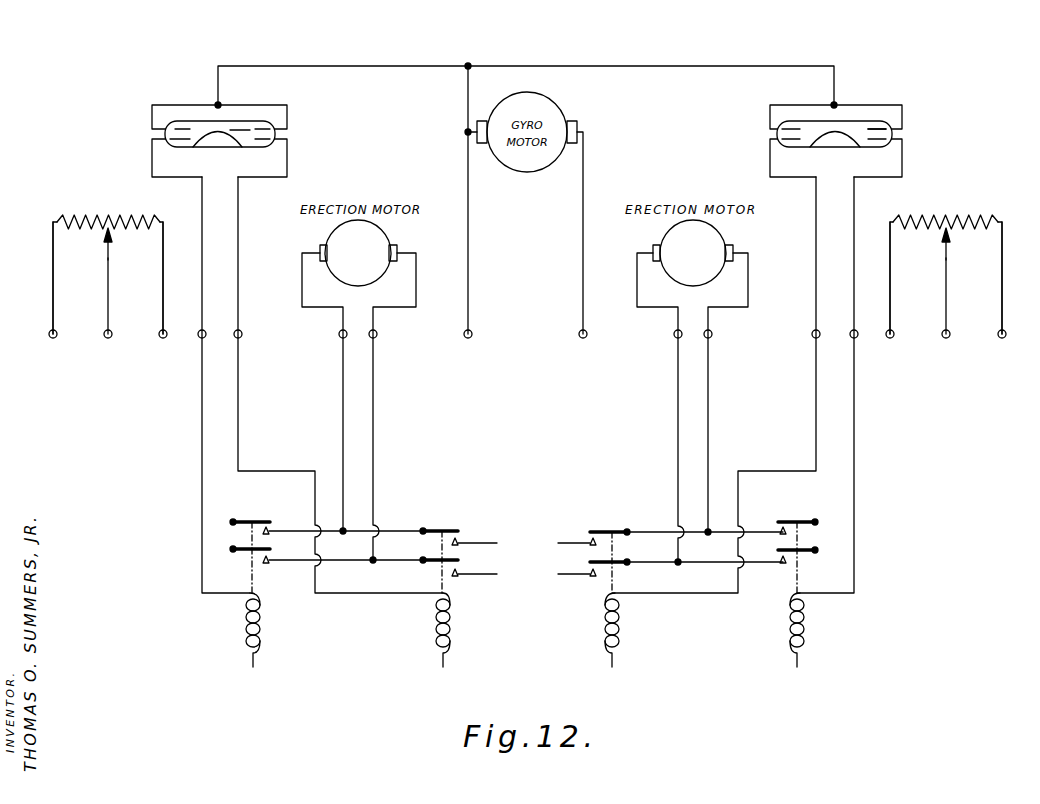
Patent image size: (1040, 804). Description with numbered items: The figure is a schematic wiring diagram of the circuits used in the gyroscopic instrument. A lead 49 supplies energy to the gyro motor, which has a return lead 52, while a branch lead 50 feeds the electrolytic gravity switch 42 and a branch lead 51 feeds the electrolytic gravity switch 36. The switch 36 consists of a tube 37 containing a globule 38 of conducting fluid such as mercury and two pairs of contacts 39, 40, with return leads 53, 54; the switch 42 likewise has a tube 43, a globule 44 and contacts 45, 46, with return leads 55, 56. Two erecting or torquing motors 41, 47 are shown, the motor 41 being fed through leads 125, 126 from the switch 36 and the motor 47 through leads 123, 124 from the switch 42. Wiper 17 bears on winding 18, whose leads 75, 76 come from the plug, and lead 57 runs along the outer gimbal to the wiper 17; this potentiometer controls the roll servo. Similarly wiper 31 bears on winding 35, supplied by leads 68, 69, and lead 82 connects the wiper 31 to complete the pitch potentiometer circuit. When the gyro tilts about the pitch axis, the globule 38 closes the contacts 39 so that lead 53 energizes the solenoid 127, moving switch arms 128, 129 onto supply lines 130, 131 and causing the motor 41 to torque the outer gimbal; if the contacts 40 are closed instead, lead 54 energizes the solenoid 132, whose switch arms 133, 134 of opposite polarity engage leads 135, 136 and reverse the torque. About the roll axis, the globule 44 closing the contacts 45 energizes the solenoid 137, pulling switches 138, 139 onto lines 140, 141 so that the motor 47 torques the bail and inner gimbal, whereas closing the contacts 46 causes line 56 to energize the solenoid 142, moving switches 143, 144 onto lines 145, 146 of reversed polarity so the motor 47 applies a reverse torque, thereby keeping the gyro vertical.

The potentiometer wiper 17 is at (112, 240).
The winding 18 is at (110, 218).
The wiper 31 is at (950, 242).
The winding 35 is at (985, 218).
The electrolytic gravity switch 36 is at (832, 125).
The tube 37 is at (868, 122).
The globule 38 is at (842, 133).
The contacts 39 is at (782, 128).
The contacts 40 is at (893, 126).
The torquing motor 41 is at (712, 243).
The electrolytic gravity switch 42 is at (250, 129).
The tube 43 is at (195, 128).
The globule 44 is at (232, 133).
The contacts 45 is at (178, 130).
The contacts 46 is at (268, 124).
The torquing motor 47 is at (380, 241).
The lead 49 is at (468, 265).
The branch lead 50 is at (372, 66).
The branch lead 51 is at (650, 66).
The return lead 52 is at (583, 235).
The return lead 53 is at (816, 309).
The return lead 54 is at (854, 300).
The return lead 55 is at (200, 292).
The return lead 56 is at (238, 268).
The lead 57 is at (108, 299).
The lead 68 is at (890, 265).
The lead 69 is at (1002, 280).
The lead 75 is at (164, 252).
The lead 76 is at (53, 270).
The lead 82 is at (946, 299).
The lead 123 is at (343, 410).
The lead 124 is at (373, 410).
The lead 125 is at (708, 410).
The lead 126 is at (678, 410).
The solenoid 127 is at (621, 622).
The switch arm 128 is at (604, 530).
The switch arm 129 is at (603, 564).
The supply line 130 is at (568, 542).
The supply line 131 is at (568, 576).
The solenoid 132 is at (806, 635).
The switch arm 133 is at (800, 521).
The switch arm 134 is at (803, 550).
The lead 135 is at (753, 530).
The lead 136 is at (752, 564).
The solenoid 137 is at (263, 635).
The switch 138 is at (248, 520).
The switch 139 is at (245, 551).
The line 140 is at (283, 531).
The line 141 is at (276, 562).
The solenoid 142 is at (453, 635).
The switch 143 is at (440, 531).
The switch 144 is at (440, 562).
The line 145 is at (472, 541).
The line 146 is at (480, 572).